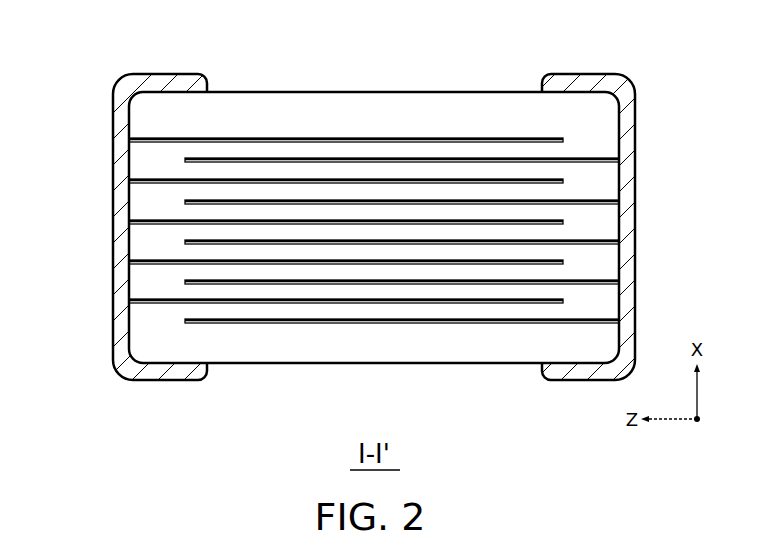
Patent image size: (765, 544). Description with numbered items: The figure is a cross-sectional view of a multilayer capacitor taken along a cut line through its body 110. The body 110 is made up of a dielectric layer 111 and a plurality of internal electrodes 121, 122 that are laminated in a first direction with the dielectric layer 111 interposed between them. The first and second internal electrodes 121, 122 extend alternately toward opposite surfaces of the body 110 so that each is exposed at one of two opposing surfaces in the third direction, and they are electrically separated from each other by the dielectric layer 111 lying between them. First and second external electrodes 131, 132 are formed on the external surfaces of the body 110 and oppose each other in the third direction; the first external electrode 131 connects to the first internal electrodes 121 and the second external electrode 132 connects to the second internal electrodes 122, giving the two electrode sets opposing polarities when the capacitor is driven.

The body 110 is at (331, 193).
The dielectric layer 111 is at (190, 168).
The first internal electrode 121 is at (352, 138).
The second internal electrode 122 is at (413, 158).
The first external electrode 131 is at (168, 83).
The second external electrode 132 is at (582, 85).